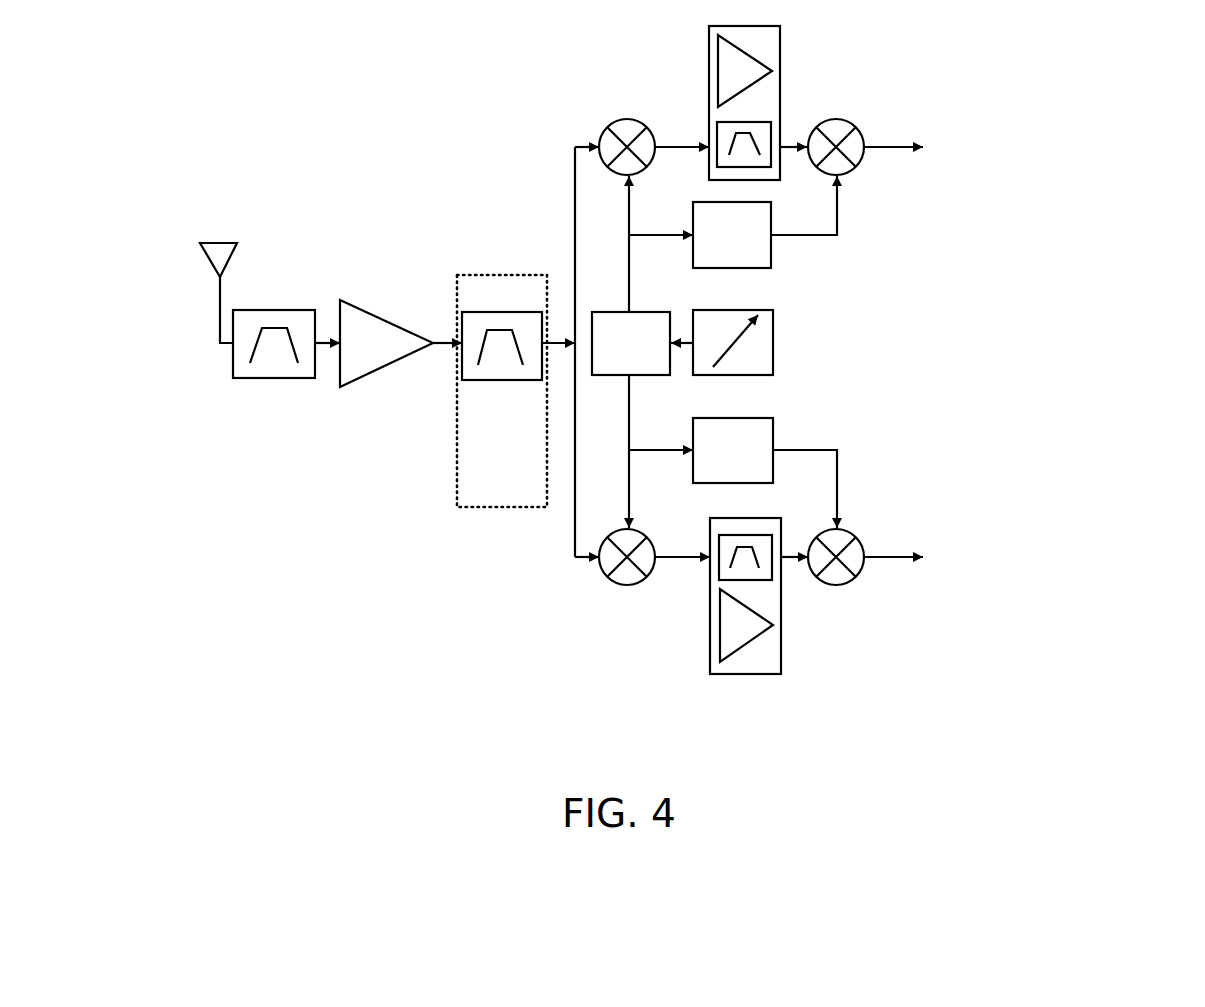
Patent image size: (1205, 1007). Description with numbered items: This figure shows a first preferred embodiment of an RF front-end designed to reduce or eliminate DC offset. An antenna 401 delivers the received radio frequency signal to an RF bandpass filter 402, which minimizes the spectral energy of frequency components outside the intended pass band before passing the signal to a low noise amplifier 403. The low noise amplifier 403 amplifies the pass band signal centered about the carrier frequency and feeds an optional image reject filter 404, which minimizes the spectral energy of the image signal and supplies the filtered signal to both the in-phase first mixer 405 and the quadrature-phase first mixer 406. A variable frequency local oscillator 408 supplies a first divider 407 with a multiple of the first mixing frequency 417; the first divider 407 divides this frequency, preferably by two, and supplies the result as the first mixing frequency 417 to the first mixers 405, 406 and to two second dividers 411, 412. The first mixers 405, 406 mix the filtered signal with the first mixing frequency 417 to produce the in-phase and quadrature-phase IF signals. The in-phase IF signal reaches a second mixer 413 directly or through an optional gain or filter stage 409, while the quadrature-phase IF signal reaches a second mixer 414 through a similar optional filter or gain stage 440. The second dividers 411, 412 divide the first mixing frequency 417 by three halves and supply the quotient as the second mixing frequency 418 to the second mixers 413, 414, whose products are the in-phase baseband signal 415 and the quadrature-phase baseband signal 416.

The antenna 401 is at (222, 288).
The RF bandpass filter 402 is at (233, 365).
The low noise amplifier 403 is at (388, 367).
The image reject filter 404 is at (457, 497).
The in-phase first mixer 405 is at (632, 119).
The quadrature-phase first mixer 406 is at (625, 588).
The first divider 407 is at (641, 308).
The variable frequency local oscillator 408 is at (774, 342).
The optional gain or filter stage 409 is at (783, 85).
The second divider 411 is at (775, 248).
The second divider 412 is at (773, 428).
The second mixer 413 is at (840, 117).
The second mixer 414 is at (837, 585).
The in-phase baseband signal 415 is at (893, 145).
The quadrature-phase baseband signal 416 is at (893, 553).
The first mixing frequency 417 is at (629, 292).
The second mixing frequency 418 is at (838, 214).
The optional filter or gain stage (quadrature path) 440 is at (781, 645).